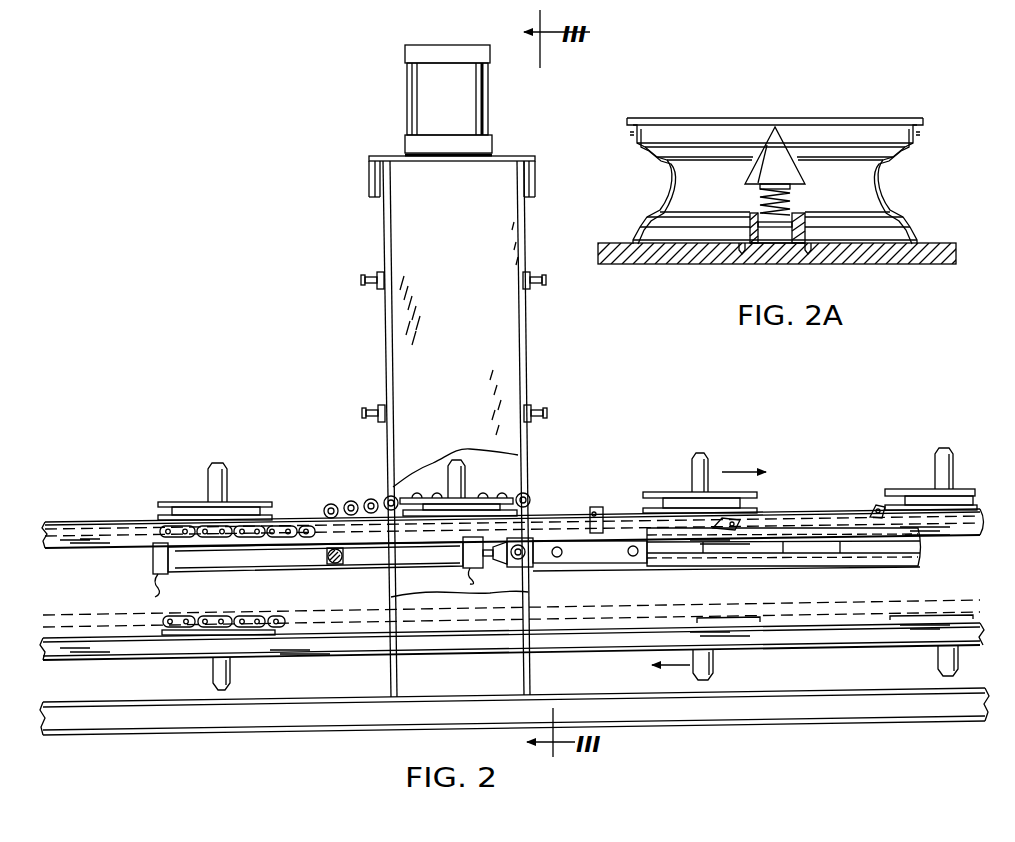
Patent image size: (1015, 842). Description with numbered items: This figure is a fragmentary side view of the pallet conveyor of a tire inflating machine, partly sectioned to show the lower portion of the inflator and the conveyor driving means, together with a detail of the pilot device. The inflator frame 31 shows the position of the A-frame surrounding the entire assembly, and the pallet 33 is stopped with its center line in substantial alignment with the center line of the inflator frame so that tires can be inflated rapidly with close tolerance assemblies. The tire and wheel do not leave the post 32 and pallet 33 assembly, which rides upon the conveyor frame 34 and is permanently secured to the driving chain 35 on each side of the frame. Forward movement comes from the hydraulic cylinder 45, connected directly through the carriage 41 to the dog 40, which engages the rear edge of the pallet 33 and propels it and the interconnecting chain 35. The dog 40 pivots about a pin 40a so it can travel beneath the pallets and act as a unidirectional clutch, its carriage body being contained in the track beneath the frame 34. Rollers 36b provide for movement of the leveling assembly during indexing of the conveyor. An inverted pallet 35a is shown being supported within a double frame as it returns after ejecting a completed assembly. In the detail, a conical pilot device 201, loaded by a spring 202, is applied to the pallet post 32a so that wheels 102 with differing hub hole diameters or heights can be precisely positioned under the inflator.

In FIG. 2, the inflator frame 31 is at (505, 331).
In FIG. 2, the post 32 is at (227, 477).
In FIG. 2, the pallet 33 is at (263, 501).
In FIG. 2A, the pallet 33 is at (951, 241).
In FIG. 2, the conveyor frame 34 is at (978, 512).
In FIG. 2, the driving chain 35 is at (175, 525).
In FIG. 2, the inverted pallet 35a is at (181, 616).
In FIG. 2, the rollers 36b is at (329, 506).
In FIG. 2, the dog 40 is at (596, 512).
In FIG. 2, the pin 40a is at (589, 517).
In FIG. 2, the carriage 41 is at (540, 562).
In FIG. 2, the hydraulic cylinder 45 is at (433, 570).
In FIG. 2A, the pilot device 201 is at (792, 132).
In FIG. 2A, the wheels 102 is at (832, 151).
In FIG. 2A, the spring 202 is at (792, 193).
In FIG. 2A, the pallet post 32a is at (812, 222).